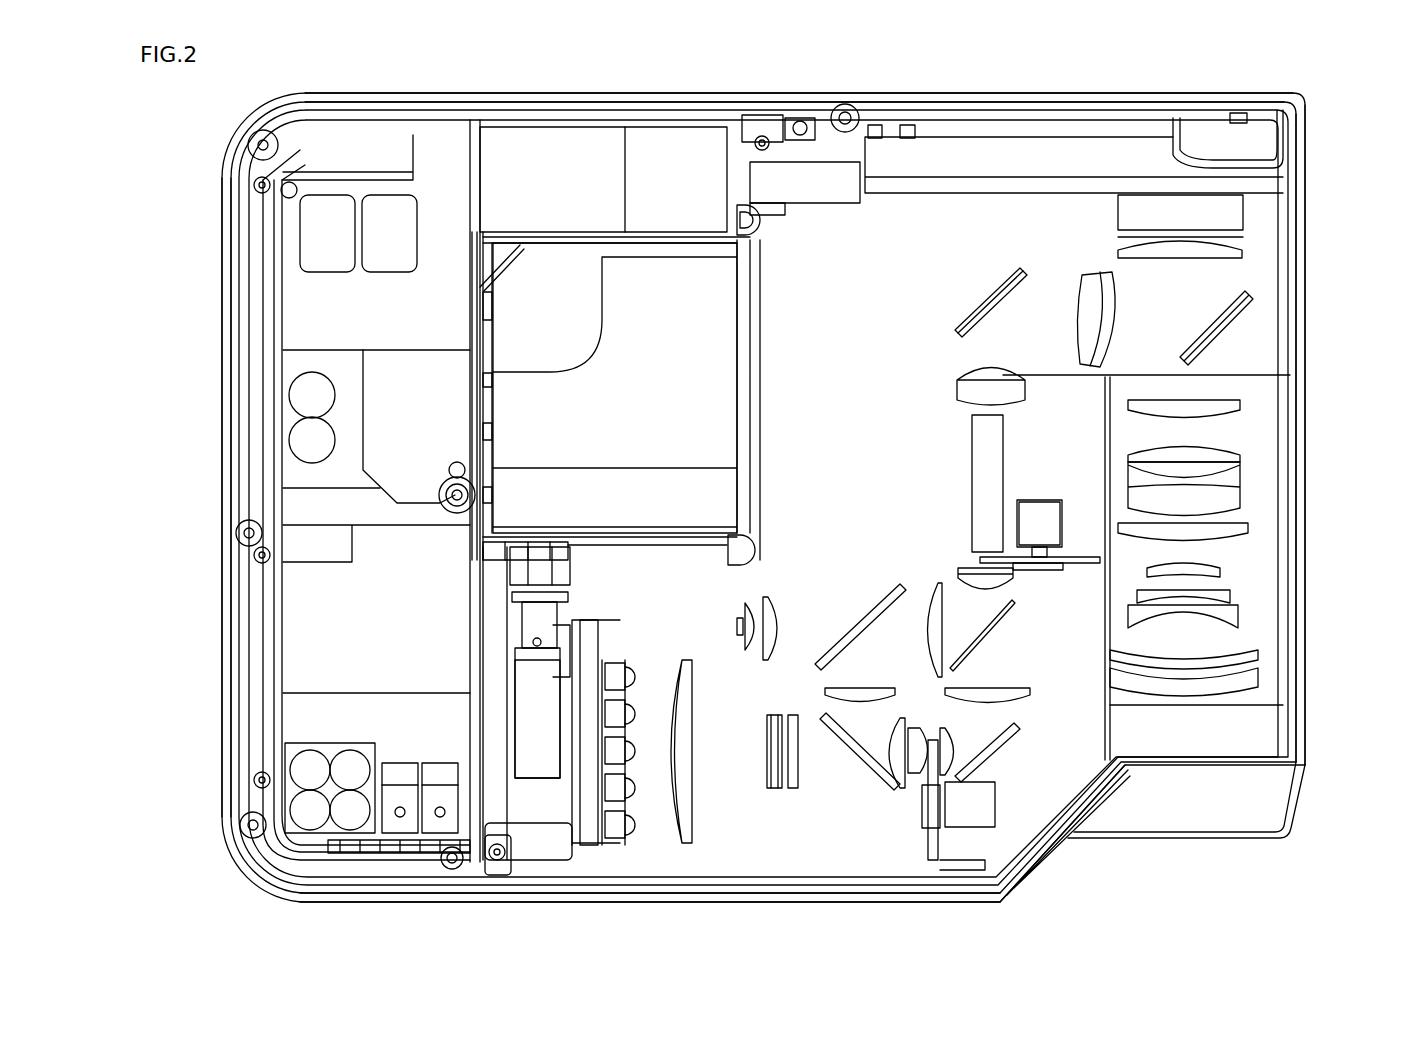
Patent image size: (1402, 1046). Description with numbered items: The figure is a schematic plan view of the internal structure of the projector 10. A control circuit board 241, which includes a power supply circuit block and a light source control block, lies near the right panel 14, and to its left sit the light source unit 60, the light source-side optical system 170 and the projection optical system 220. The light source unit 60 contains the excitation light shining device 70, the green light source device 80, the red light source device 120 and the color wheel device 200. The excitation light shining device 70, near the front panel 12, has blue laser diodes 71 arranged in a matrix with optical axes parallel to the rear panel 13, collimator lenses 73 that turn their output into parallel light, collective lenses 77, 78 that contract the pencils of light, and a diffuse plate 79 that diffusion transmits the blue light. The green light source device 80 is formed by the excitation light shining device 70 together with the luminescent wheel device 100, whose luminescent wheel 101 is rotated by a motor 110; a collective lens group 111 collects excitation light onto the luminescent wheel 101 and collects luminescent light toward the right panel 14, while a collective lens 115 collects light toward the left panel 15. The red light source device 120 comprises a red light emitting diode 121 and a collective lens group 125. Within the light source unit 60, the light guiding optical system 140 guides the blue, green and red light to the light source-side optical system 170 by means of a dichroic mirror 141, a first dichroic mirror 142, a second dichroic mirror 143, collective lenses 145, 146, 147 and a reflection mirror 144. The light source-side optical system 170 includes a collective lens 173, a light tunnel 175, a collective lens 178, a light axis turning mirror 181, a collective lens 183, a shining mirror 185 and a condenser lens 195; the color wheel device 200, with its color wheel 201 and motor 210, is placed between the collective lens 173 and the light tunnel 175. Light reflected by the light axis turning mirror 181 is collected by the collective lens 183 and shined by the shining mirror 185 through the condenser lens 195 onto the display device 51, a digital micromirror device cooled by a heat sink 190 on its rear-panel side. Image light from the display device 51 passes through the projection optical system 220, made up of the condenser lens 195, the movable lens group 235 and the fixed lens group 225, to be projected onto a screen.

The projector 10 is at (1318, 109).
The front panel 12 is at (380, 893).
The rear panel 13 is at (604, 100).
The right panel 14 is at (240, 330).
The left panel 15 is at (1306, 656).
The display device 51 is at (1222, 228).
The light source unit 60 is at (857, 413).
The excitation light shining device 70 is at (577, 786).
The blue laser diodes 71 is at (592, 788).
The collimator lenses 73 is at (626, 845).
The collective lens 77 is at (678, 790).
The collective lens 78 is at (772, 790).
The diffuse plate 79 is at (793, 790).
The green light source device 80 is at (504, 810).
The luminescent wheel device 100 is at (1015, 826).
The luminescent wheel 101 is at (962, 880).
The motor 110 is at (998, 828).
The collective lens group 111 is at (933, 805).
The collective lens 115 is at (962, 740).
The red light source device 120 is at (688, 613).
The red light emitting diode 121 is at (735, 628).
The collective lens group 125 is at (738, 602).
The light guiding optical system 140 is at (1090, 838).
The dichroic mirror 141 is at (862, 752).
The first dichroic mirror 142 is at (870, 628).
The second dichroic mirror 143 is at (985, 640).
The reflection mirror 144 is at (1005, 750).
The collective lens 145 is at (826, 694).
The collective lens 146 is at (926, 618).
The collective lens 147 is at (1000, 698).
The light source-side optical system 170 is at (1018, 248).
The collective lens 173 is at (960, 572).
The light tunnel 175 is at (975, 472).
The collective lens 178 is at (1290, 377).
The light axis turning mirror 181 is at (1002, 270).
The collective lens 183 is at (1113, 300).
The shining mirror 185 is at (1215, 335).
The heat sink 190 is at (1140, 150).
The condenser lens 195 is at (1240, 250).
The color wheel device 200 is at (1052, 506).
The color wheel 201 is at (982, 560).
The motor 210 is at (1038, 525).
The projection optical system 220 is at (1253, 651).
The fixed lens group 225 is at (1226, 698).
The movable lens group 235 is at (1257, 443).
The control circuit board 241 is at (352, 622).